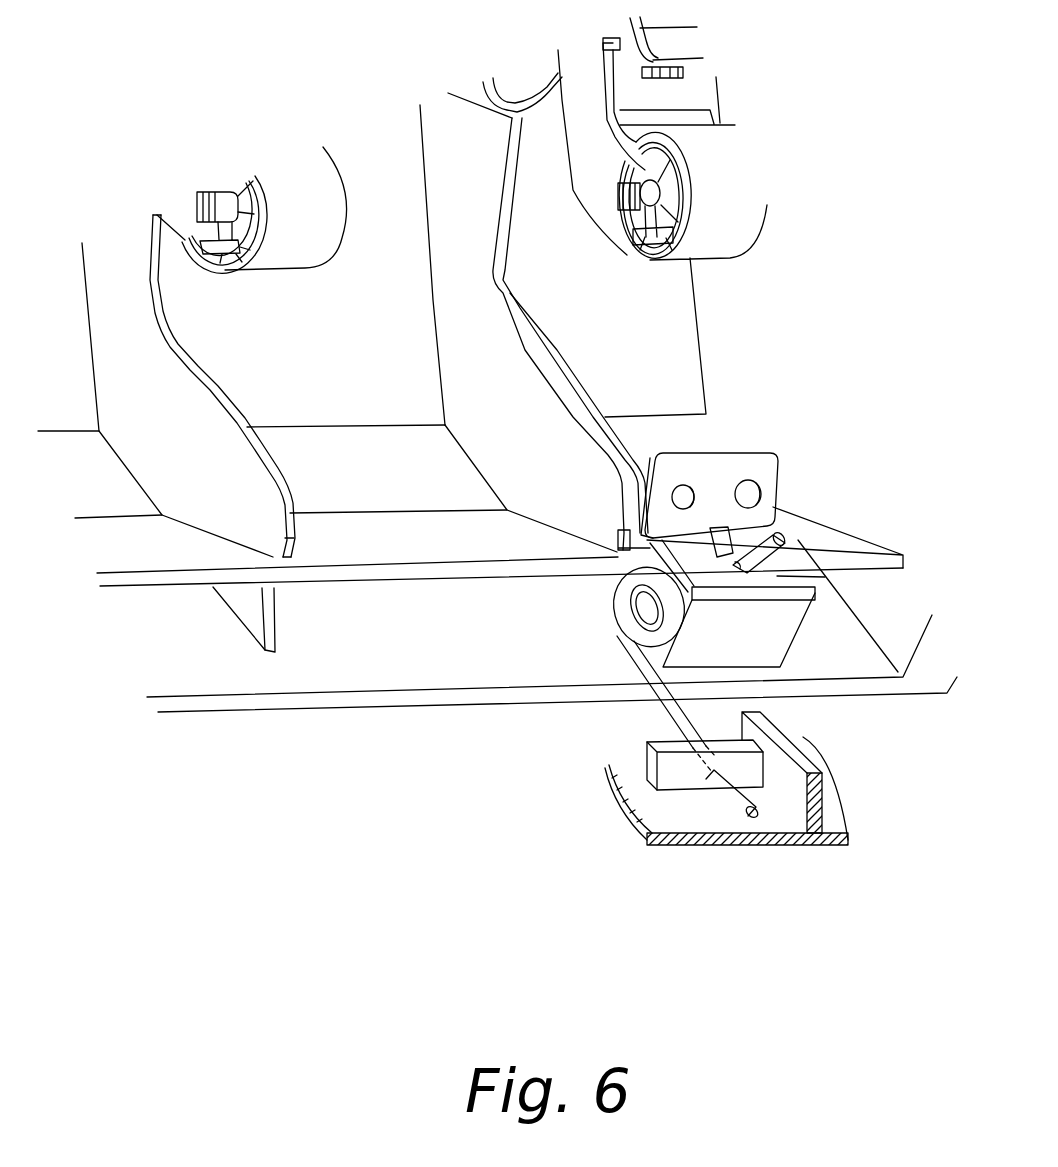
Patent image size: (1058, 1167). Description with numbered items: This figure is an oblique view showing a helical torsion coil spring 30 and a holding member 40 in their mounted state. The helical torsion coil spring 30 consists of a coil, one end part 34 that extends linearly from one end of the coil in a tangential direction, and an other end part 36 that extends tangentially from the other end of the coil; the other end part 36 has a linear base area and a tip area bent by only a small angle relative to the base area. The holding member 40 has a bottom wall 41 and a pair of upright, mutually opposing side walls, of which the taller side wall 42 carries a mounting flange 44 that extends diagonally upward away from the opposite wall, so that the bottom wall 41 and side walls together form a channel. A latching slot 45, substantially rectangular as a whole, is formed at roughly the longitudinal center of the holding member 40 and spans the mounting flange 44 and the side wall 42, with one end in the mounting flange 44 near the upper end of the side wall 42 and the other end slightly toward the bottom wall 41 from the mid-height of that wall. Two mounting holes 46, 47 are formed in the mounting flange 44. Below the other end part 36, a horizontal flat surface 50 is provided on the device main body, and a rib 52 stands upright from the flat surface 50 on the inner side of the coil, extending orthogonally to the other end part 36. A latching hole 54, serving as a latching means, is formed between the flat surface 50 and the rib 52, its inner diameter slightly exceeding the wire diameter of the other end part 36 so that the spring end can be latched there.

The helical torsion coil spring 30 is at (603, 618).
The one end part 34 is at (793, 557).
The other end part 36 is at (658, 713).
The holding member 40 is at (759, 445).
The bottom wall 41 is at (777, 645).
The side wall 42 is at (826, 579).
The mounting flange 44 is at (723, 462).
The latching slot 45 is at (618, 528).
The mounting hole 46 is at (683, 482).
The mounting hole 47 is at (755, 473).
The flat surface 50 is at (663, 810).
The rib 52 is at (680, 778).
The latching hole 54 is at (720, 790).